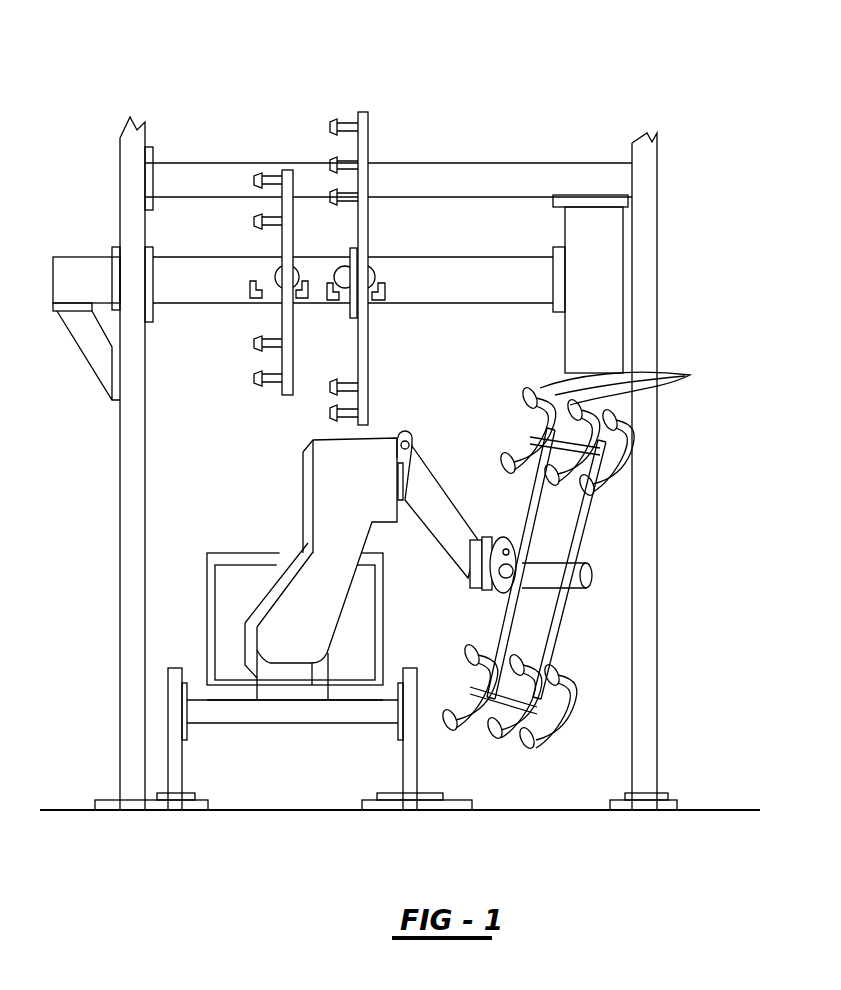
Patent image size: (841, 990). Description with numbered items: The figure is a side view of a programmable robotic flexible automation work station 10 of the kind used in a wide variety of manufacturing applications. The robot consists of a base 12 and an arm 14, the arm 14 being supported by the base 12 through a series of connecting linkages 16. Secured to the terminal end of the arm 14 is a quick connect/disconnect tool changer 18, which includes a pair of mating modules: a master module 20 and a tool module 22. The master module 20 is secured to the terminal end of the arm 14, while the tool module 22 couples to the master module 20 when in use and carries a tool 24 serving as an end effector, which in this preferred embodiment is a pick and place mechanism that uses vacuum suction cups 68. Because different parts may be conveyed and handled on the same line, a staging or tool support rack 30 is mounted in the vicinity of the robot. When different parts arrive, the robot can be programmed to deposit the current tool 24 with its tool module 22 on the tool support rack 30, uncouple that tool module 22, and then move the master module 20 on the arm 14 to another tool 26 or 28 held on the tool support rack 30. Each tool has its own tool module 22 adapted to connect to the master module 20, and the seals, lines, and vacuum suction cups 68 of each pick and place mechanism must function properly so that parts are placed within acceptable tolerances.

The flexible automation work station 10 is at (73, 100).
The base 12 is at (243, 631).
The arm 14 is at (448, 497).
The connecting linkages 16 is at (405, 440).
The quick connect/disconnect tool changer 18 is at (462, 592).
The master module 20 is at (488, 538).
The tool module 22 is at (503, 593).
The tool 24 is at (602, 583).
The tool 26 is at (368, 130).
The tool 28 is at (287, 170).
The tool support rack 30 is at (657, 250).
The vacuum suction cups 68 is at (688, 378).